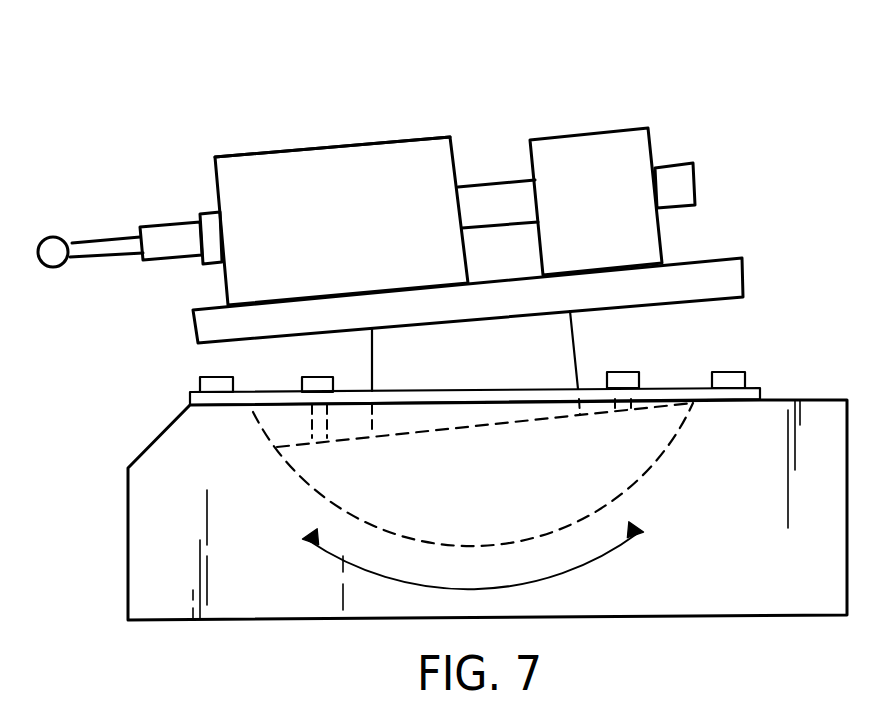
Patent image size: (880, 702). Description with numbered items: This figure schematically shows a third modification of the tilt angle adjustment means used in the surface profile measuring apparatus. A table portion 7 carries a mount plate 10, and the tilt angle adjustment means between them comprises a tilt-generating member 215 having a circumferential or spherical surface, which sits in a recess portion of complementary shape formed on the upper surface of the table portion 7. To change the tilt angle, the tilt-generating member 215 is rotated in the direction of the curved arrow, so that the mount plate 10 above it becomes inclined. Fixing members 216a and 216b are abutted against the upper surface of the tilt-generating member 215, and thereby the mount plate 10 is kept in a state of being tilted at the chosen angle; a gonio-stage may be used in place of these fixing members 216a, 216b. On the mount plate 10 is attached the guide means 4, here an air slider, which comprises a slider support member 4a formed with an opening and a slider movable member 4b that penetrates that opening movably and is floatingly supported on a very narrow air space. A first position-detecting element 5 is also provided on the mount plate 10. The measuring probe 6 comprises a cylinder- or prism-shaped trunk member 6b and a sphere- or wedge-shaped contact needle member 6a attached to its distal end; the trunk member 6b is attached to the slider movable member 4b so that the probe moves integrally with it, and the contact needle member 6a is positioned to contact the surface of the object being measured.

The guide means 4 is at (409, 125).
The slider support member 4a is at (285, 162).
The slider movable member 4b is at (210, 223).
The first position-detecting element 5 is at (597, 147).
The measuring probe 6 is at (116, 274).
The contact needle member 6a is at (48, 250).
The trunk member 6b is at (152, 238).
The table portion 7 is at (771, 603).
The mount plate 10 is at (716, 268).
The tilt-generating member 215 is at (625, 462).
The fixing member 216a is at (322, 376).
The fixing member 216b is at (617, 372).